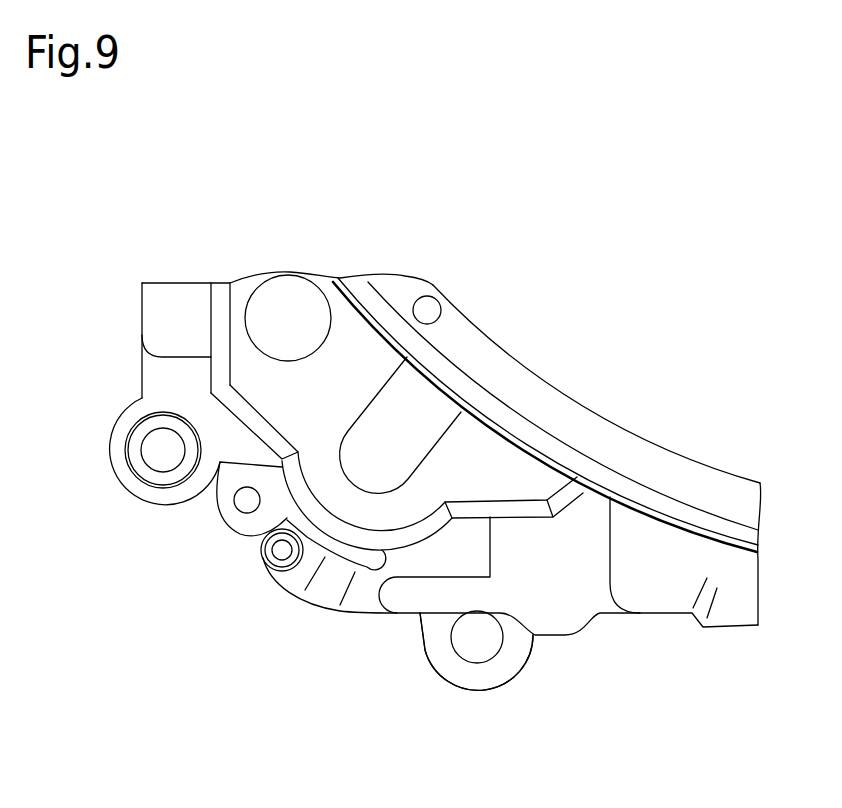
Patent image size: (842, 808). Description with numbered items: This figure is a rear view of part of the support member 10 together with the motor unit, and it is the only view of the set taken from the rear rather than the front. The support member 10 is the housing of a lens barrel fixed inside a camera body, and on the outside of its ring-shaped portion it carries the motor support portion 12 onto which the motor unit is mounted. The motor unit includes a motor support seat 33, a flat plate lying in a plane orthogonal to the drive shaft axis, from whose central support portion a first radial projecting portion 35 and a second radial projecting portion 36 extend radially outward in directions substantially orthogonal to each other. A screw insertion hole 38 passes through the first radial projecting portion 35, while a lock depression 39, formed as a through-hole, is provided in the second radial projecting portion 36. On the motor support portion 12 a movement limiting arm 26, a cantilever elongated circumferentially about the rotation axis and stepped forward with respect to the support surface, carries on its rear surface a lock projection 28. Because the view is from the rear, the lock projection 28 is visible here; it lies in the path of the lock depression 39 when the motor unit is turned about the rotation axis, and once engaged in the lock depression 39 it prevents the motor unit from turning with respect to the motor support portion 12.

The support member 10 is at (740, 503).
The motor support portion 12 is at (326, 622).
The movement limiting arm 26 is at (298, 580).
The lock projection 28 is at (275, 554).
The motor support seat 33 is at (510, 697).
The first radial projecting portion 35 is at (512, 653).
The second radial projecting portion 36 is at (232, 524).
The screw insertion hole 38 is at (458, 652).
The lock depression 39 is at (236, 499).